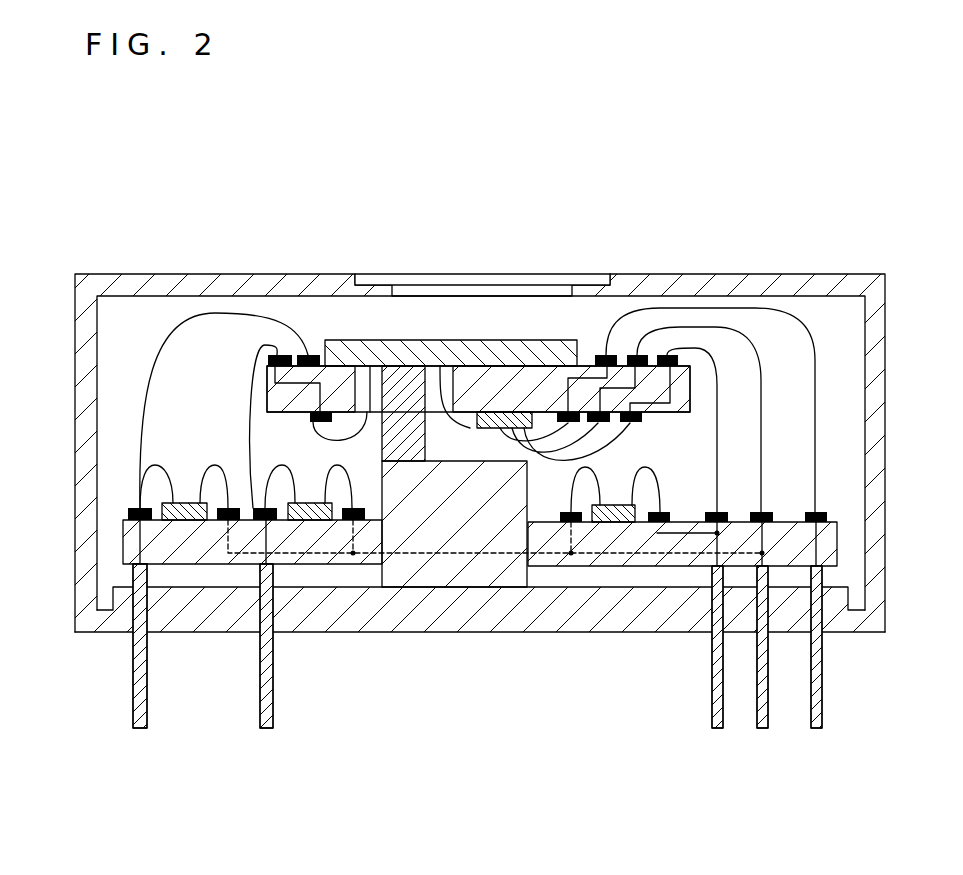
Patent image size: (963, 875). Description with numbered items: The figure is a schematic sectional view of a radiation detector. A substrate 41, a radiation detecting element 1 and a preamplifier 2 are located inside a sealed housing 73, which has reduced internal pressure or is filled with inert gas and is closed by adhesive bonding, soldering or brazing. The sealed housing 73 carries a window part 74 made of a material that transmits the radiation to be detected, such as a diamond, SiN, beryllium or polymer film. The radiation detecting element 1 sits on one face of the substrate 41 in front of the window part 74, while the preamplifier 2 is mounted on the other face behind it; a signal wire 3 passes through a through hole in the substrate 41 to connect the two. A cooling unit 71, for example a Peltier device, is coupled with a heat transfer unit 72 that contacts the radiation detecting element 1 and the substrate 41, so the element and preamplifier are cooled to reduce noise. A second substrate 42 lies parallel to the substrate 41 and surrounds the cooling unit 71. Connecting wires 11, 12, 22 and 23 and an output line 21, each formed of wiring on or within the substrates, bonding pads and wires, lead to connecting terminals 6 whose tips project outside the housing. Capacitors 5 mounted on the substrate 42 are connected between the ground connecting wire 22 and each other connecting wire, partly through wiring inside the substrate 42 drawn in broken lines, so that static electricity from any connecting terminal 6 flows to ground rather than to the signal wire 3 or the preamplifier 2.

The radiation detecting element 1 is at (448, 340).
The preamplifier 2 is at (490, 430).
The signal wire 3 is at (476, 436).
The capacitor 5 is at (187, 503).
The connecting terminal 6 is at (140, 730).
The connecting wire 11 is at (248, 414).
The connecting wire 12 is at (143, 382).
The output line 21 is at (813, 402).
The connecting wire 22 is at (762, 490).
The connecting wire 23 is at (717, 473).
The substrate 41 is at (261, 383).
The substrate 42 is at (125, 536).
The cooling unit 71 is at (455, 588).
The heat transfer unit 72 is at (381, 455).
The sealed housing 73 is at (716, 282).
The window part 74 is at (485, 280).